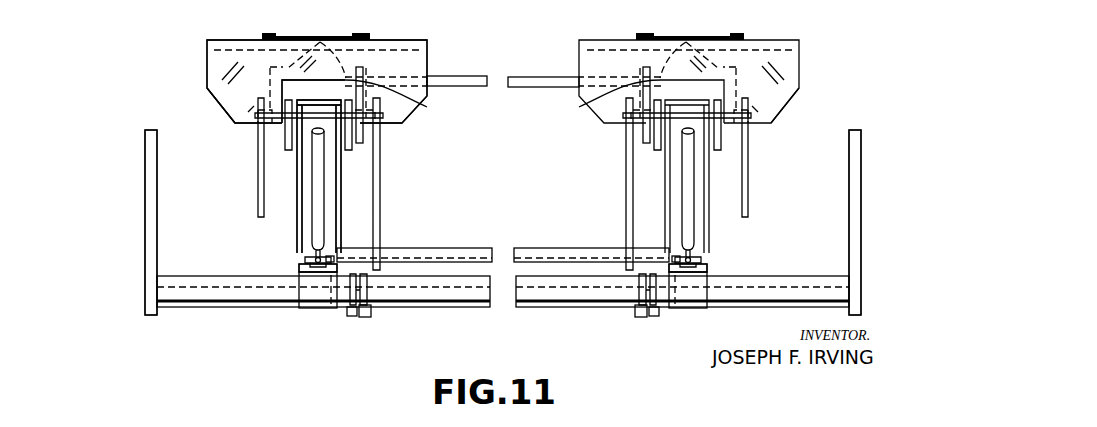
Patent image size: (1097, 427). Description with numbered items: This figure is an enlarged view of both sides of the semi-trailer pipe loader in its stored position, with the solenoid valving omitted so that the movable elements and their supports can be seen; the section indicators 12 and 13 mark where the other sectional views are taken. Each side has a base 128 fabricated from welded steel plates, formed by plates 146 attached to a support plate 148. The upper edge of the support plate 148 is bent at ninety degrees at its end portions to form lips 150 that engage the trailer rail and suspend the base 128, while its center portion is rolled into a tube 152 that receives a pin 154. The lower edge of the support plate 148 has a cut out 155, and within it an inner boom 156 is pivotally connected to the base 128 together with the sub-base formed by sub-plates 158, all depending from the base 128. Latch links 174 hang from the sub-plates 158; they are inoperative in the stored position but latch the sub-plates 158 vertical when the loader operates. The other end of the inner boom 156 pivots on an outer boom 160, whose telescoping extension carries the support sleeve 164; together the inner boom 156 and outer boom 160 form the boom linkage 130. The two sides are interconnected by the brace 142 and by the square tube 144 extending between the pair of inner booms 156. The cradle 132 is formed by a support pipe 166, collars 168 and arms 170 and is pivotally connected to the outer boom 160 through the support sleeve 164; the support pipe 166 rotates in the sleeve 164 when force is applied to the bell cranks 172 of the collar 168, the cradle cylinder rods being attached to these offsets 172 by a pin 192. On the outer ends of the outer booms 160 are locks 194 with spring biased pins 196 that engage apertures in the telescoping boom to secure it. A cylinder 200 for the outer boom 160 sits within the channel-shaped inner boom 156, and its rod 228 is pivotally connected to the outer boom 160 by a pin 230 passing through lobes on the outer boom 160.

The section line 12 is at (138, 267).
The section line 13 is at (304, 7).
The base 128 is at (388, 34).
The boom linkage 130 is at (238, 229).
The cradle 132 is at (140, 130).
The brace 142 is at (467, 77).
The square tube 144 is at (512, 250).
The plates 146 is at (330, 40).
The support plate 148 is at (208, 89).
The lips 150 is at (226, 43).
The tube 152 is at (344, 36).
The pin 154 is at (268, 34).
The cut out 155 is at (422, 104).
The inner boom 156 is at (298, 190).
The sub-plates 158 is at (262, 147).
The outer boom 160 is at (300, 280).
The support sleeve 164 is at (312, 300).
The support pipe 166 is at (540, 302).
The collars 168 is at (364, 296).
The arms 170 is at (150, 172).
The bell cranks 172 is at (368, 313).
The latch links 174 is at (259, 201).
The pin 192 is at (372, 318).
The locks 194 is at (333, 266).
The spring biased pins 196 is at (322, 258).
The cylinder 200 is at (326, 168).
The rod 228 is at (312, 250).
The pin 230 is at (312, 255).